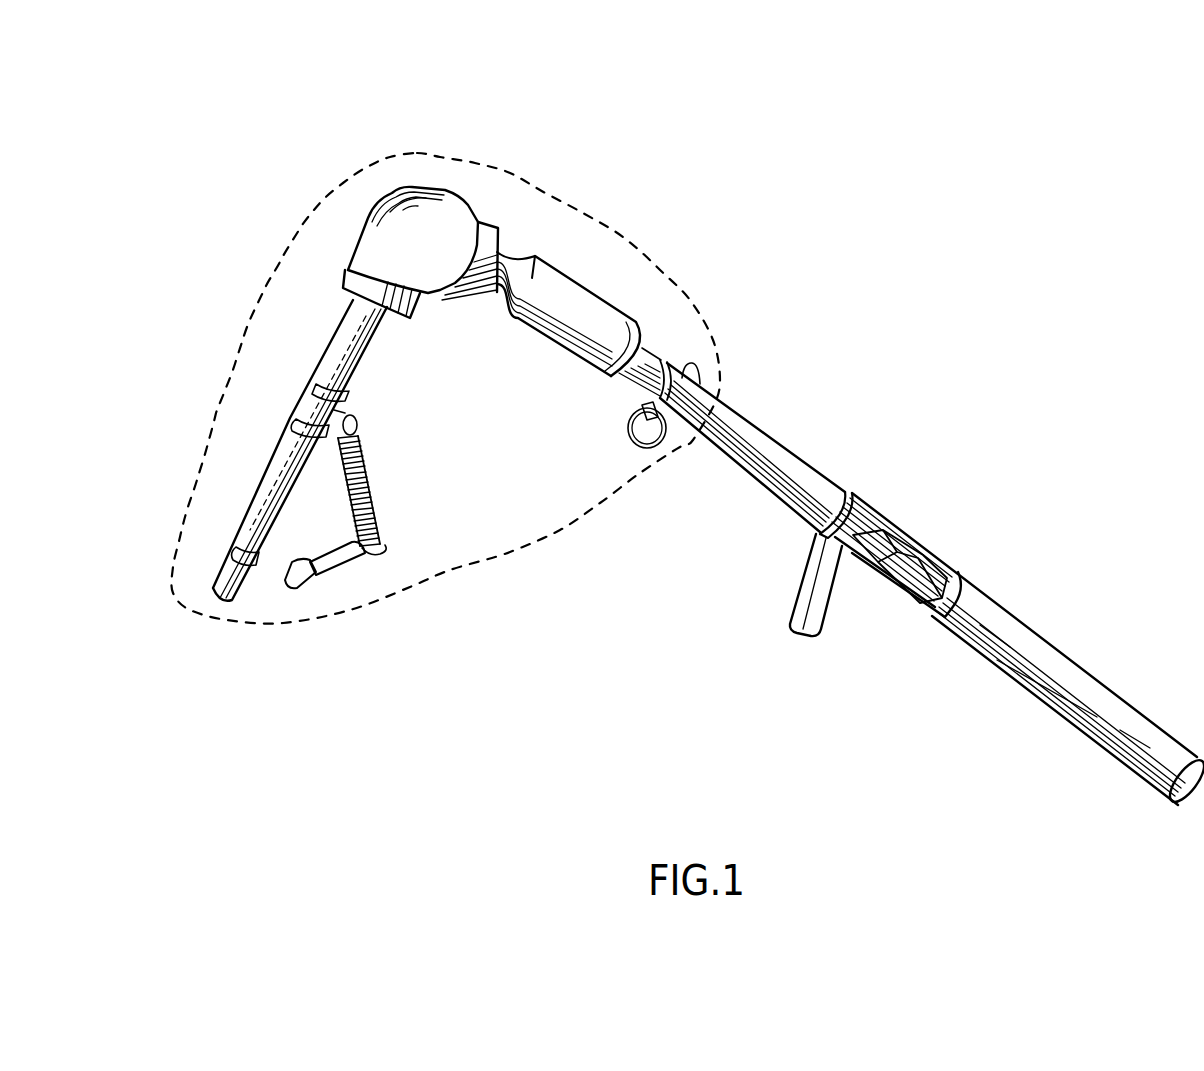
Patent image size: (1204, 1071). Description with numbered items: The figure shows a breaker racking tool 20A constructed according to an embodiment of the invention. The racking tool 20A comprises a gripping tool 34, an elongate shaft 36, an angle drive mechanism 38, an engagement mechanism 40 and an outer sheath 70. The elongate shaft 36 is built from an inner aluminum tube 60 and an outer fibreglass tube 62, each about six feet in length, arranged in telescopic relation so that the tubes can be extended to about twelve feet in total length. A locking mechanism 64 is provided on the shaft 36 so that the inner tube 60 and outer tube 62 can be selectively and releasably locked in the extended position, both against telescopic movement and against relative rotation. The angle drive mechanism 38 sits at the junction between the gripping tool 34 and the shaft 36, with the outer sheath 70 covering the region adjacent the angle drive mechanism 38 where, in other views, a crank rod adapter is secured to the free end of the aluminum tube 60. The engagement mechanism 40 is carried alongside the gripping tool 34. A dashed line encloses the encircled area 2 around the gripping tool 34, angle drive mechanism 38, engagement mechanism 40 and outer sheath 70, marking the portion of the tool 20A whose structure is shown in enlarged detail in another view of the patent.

The encircled area 2 is at (238, 355).
The breaker racking tool 20A is at (403, 140).
The gripping tool 34 is at (248, 485).
The elongate shaft 36 is at (878, 742).
The angle drive mechanism 38 is at (350, 220).
The engagement mechanism 40 is at (395, 485).
The inner aluminum tube 60 is at (782, 489).
The outer fibreglass tube 62 is at (983, 633).
The locking mechanism 64 is at (875, 606).
The outer sheath 70 is at (549, 332).